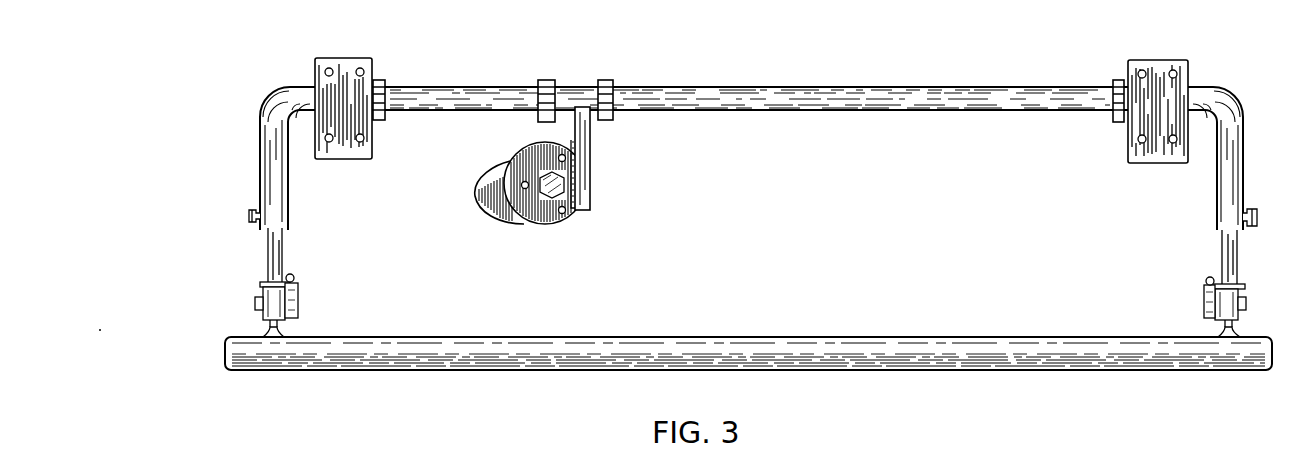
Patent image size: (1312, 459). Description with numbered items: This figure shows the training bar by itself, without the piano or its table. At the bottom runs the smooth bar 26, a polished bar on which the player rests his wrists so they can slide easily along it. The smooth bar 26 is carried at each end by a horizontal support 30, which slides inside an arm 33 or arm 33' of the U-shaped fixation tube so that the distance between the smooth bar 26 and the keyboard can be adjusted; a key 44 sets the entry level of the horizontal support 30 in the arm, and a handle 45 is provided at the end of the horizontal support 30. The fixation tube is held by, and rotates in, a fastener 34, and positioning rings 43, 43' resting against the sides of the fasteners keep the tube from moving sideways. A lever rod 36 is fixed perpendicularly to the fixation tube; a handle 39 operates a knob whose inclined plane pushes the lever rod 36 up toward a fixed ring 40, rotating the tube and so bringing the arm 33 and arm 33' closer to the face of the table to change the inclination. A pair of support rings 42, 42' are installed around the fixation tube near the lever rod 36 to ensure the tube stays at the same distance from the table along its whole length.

The smooth bar 26 is at (488, 347).
The horizontal support 30 is at (275, 250).
The arm 33 is at (251, 158).
The arm 33' is at (1250, 158).
The fastener 34 is at (334, 58).
The lever rod 36 is at (583, 172).
The handle 39 is at (476, 193).
The fixed ring 40 is at (528, 160).
The support ring 42 is at (590, 68).
The support ring 42' is at (521, 69).
The positioning ring 43 is at (398, 68).
The positioning ring 43' is at (1088, 69).
The key 44 is at (250, 214).
The handle 45 is at (296, 278).